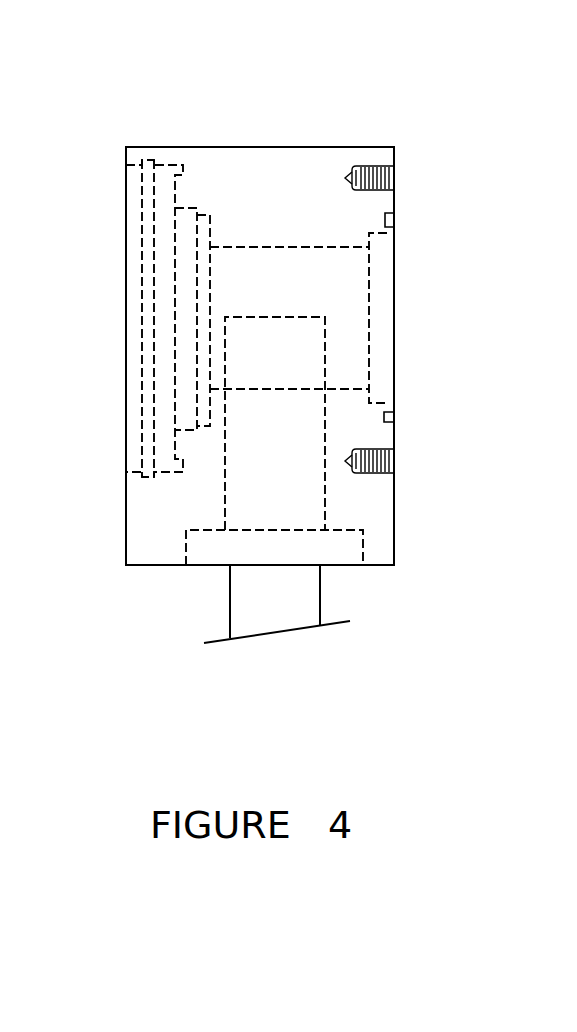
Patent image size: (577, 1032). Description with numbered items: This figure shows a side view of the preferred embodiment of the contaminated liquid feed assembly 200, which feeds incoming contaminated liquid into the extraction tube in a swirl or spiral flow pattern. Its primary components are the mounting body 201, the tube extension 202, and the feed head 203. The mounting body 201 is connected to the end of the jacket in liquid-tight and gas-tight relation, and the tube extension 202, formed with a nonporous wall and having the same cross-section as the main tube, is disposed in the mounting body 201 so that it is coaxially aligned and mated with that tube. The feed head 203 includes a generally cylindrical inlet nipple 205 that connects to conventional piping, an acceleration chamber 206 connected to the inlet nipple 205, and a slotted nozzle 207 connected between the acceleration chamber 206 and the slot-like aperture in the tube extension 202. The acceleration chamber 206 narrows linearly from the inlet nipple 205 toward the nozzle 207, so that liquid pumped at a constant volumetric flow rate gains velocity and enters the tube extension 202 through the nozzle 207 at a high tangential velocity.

The contaminated liquid feed assembly 200 is at (312, 103).
The mounting body 201 is at (225, 165).
The tube extension 202 is at (328, 277).
The feed head 203 is at (170, 502).
The inlet nipple 205 is at (290, 600).
The acceleration chamber 206 is at (280, 510).
The slotted nozzle 207 is at (280, 359).